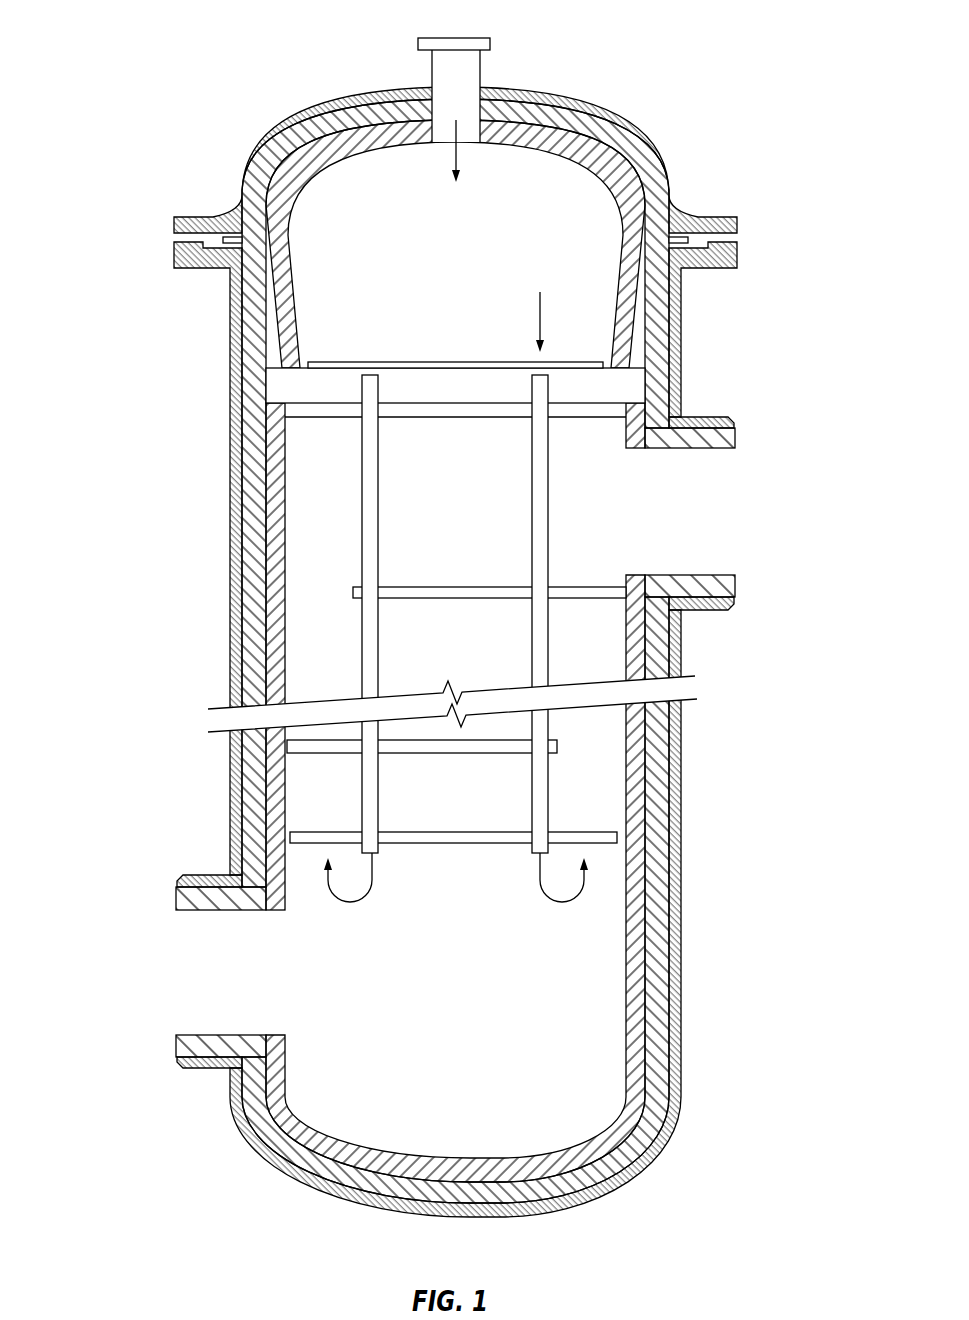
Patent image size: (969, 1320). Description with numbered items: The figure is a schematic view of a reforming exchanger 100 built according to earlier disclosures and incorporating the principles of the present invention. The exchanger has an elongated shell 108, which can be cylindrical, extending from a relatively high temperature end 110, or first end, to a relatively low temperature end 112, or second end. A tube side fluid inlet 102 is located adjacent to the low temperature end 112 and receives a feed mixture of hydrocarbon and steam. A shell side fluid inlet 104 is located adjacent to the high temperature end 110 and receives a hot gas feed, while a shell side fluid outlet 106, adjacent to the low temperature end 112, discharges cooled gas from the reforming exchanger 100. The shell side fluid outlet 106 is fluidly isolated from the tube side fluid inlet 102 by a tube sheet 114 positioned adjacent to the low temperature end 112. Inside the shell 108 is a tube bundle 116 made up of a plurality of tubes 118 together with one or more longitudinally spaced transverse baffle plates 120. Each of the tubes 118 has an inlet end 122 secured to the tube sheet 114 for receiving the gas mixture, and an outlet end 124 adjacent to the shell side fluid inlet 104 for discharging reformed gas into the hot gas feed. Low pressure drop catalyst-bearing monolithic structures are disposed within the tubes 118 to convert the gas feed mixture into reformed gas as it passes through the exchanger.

The reforming exchanger 100 is at (140, 68).
The tube side fluid inlet 102 is at (463, 73).
The shell side fluid inlet 104 is at (274, 970).
The shell side fluid outlet 106 is at (628, 512).
The elongated shell 108 is at (673, 858).
The high temperature end 110 is at (632, 1170).
The low temperature end 112 is at (627, 125).
The tube sheet 114 is at (625, 392).
The tube bundle 116 is at (455, 638).
The tubes 118 is at (370, 452).
The transverse baffle plates 120 is at (423, 750).
The inlet end 122 is at (370, 382).
The outlet end 124 is at (377, 853).